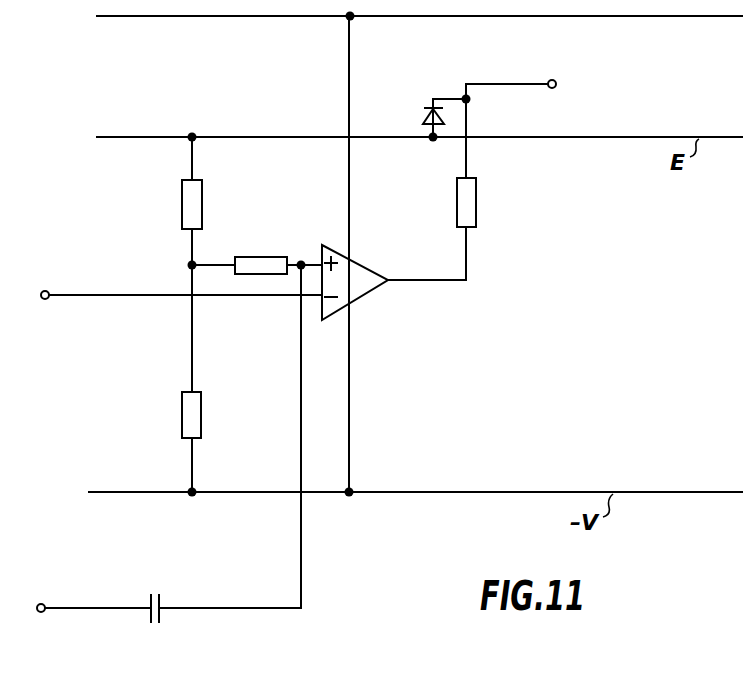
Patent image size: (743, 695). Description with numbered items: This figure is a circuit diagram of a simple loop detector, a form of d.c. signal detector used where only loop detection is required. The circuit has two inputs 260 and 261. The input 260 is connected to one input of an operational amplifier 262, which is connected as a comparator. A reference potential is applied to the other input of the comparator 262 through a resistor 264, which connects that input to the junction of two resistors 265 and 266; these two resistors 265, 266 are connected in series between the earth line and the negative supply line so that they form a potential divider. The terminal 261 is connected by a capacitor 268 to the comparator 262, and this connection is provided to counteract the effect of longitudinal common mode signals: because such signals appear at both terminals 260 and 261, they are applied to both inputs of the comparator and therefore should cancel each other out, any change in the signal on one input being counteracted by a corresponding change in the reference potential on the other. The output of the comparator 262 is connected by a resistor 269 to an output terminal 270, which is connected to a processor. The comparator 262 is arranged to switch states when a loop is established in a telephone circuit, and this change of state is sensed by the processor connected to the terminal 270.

The input 260 is at (46, 291).
The input 261 is at (41, 604).
The operational amplifier 262 is at (356, 283).
The resistor 264 is at (265, 264).
The resistor 265 is at (193, 200).
The resistor 266 is at (194, 420).
The capacitor 268 is at (163, 601).
The resistor 269 is at (470, 212).
The output terminal 270 is at (555, 88).